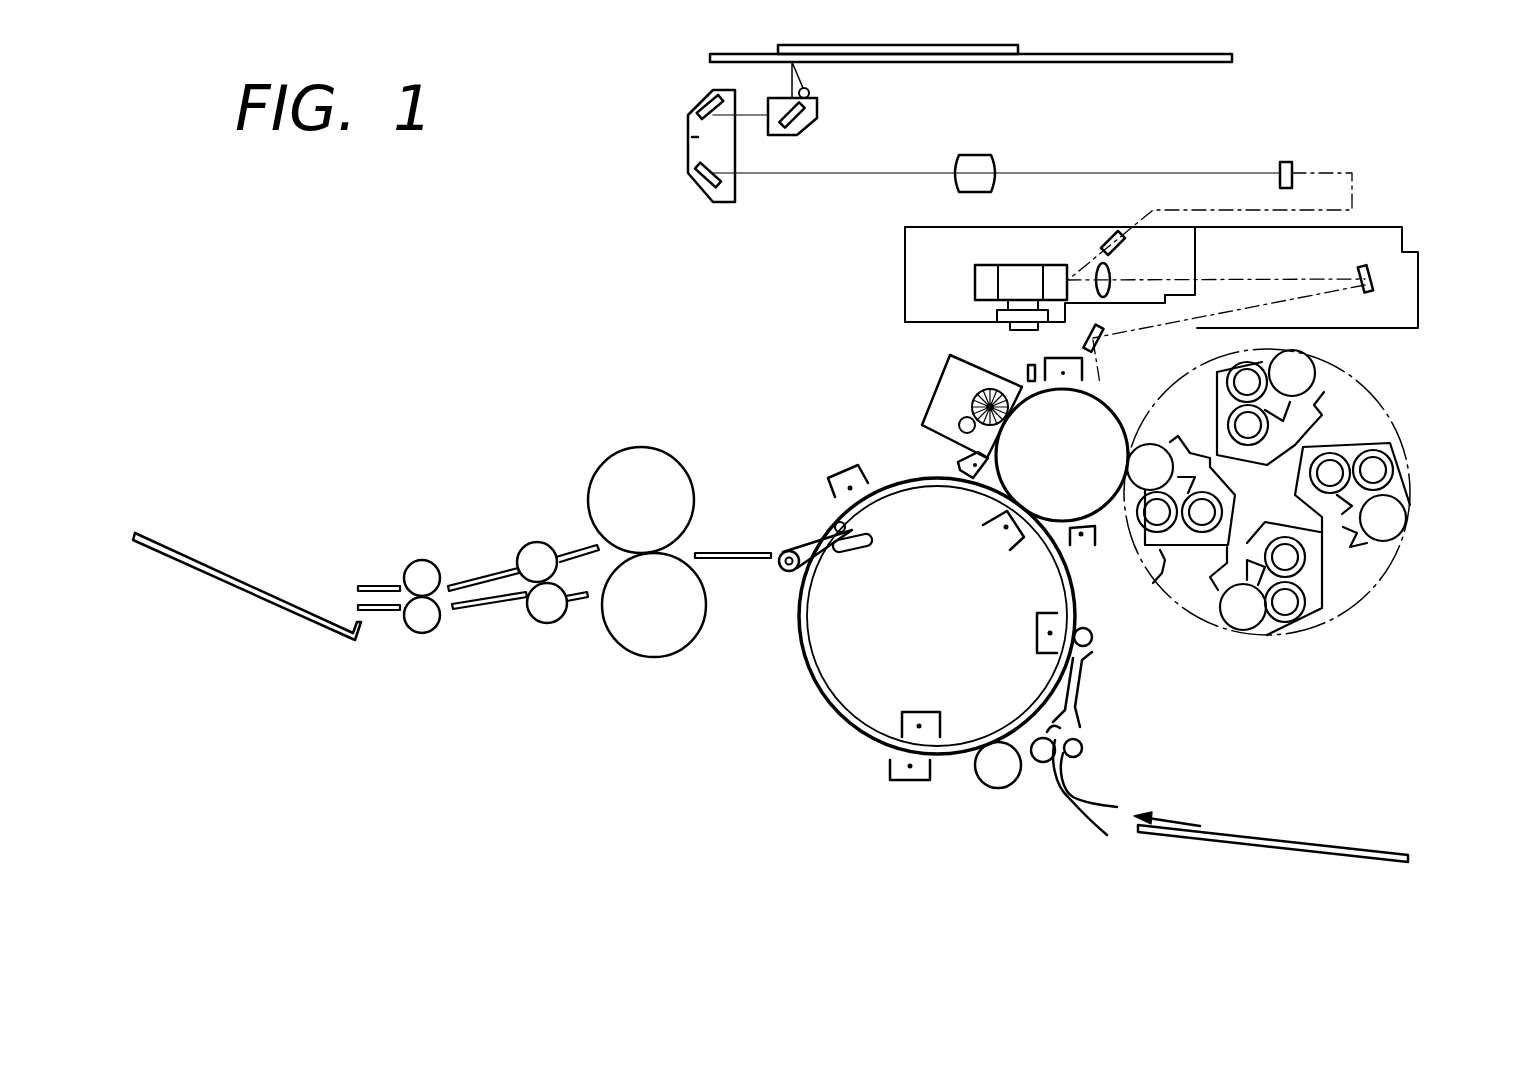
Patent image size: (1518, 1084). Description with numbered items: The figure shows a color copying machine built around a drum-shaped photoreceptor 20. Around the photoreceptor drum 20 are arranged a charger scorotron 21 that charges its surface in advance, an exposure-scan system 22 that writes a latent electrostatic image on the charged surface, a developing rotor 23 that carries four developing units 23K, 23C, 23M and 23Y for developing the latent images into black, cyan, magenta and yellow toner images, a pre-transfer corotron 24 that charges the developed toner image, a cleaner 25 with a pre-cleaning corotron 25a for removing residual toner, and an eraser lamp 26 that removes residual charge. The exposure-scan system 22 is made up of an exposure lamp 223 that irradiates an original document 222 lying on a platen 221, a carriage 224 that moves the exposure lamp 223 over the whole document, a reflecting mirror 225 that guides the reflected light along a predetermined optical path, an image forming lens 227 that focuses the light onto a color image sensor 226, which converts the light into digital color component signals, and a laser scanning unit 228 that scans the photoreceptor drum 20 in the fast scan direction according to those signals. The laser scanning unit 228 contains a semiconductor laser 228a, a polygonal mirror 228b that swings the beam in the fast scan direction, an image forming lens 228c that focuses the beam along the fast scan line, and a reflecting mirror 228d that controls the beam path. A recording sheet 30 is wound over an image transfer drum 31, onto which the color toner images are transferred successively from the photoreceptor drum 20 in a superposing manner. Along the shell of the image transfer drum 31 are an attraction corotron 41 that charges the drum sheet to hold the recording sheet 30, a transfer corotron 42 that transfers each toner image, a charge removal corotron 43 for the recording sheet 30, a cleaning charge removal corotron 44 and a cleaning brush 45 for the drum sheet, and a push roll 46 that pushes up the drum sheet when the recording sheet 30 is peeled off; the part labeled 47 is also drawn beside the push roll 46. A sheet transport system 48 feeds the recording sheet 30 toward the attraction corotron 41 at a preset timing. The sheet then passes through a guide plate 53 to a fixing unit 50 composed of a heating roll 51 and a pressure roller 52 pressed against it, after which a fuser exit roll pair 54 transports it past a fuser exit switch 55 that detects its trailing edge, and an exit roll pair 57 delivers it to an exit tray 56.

The photoreceptor drum 20 is at (1126, 412).
The charger scorotron 21 is at (1045, 362).
The exposure-scan system 22 is at (858, 255).
The developing rotor 23 is at (1400, 426).
The cyan developing unit 23C is at (1312, 383).
The magenta developing unit 23M is at (1380, 465).
The yellow developing unit 23Y is at (1292, 607).
The black developing unit 23K is at (1160, 588).
The pre-transfer corotron 24 is at (1085, 548).
The cleaner 25 is at (940, 376).
The pre-cleaning corotron 25a is at (958, 462).
The eraser lamp 26 is at (1028, 370).
The recording sheet 30 is at (1367, 850).
The image transfer drum 31 is at (832, 712).
The attraction corotron 41 is at (1037, 636).
The transfer corotron 42 is at (1000, 545).
The charge removal corotron 43 is at (833, 473).
The cleaning charge removal corotron 44 is at (910, 783).
The cleaning brush 45 is at (1000, 788).
The push roll 46 is at (857, 555).
The separation lever 47 is at (787, 550).
The sheet transport system 48 is at (1080, 748).
The fixing unit 50 is at (683, 447).
The heating roll 51 is at (618, 450).
The pressure roller 52 is at (652, 663).
The guide plate 53 is at (732, 553).
The fuser exit roll pair 54 is at (550, 545).
The fuser exit switch 55 is at (492, 572).
The exit tray 56 is at (197, 558).
The exit roll pair 57 is at (425, 560).
The platen 221 is at (1186, 52).
The original document 222 is at (973, 49).
The exposure lamp 223 is at (810, 90).
The carriage 224 is at (817, 115).
The reflecting mirror 225 is at (688, 153).
The color image sensor 226 is at (1284, 160).
The image forming lens 227 is at (976, 150).
The laser scanning unit 228 is at (1376, 228).
The laser 228a is at (1100, 238).
The polygonal mirror 228b is at (968, 282).
The image forming lens 228c is at (1110, 272).
The reflecting mirror 228d is at (1100, 335).